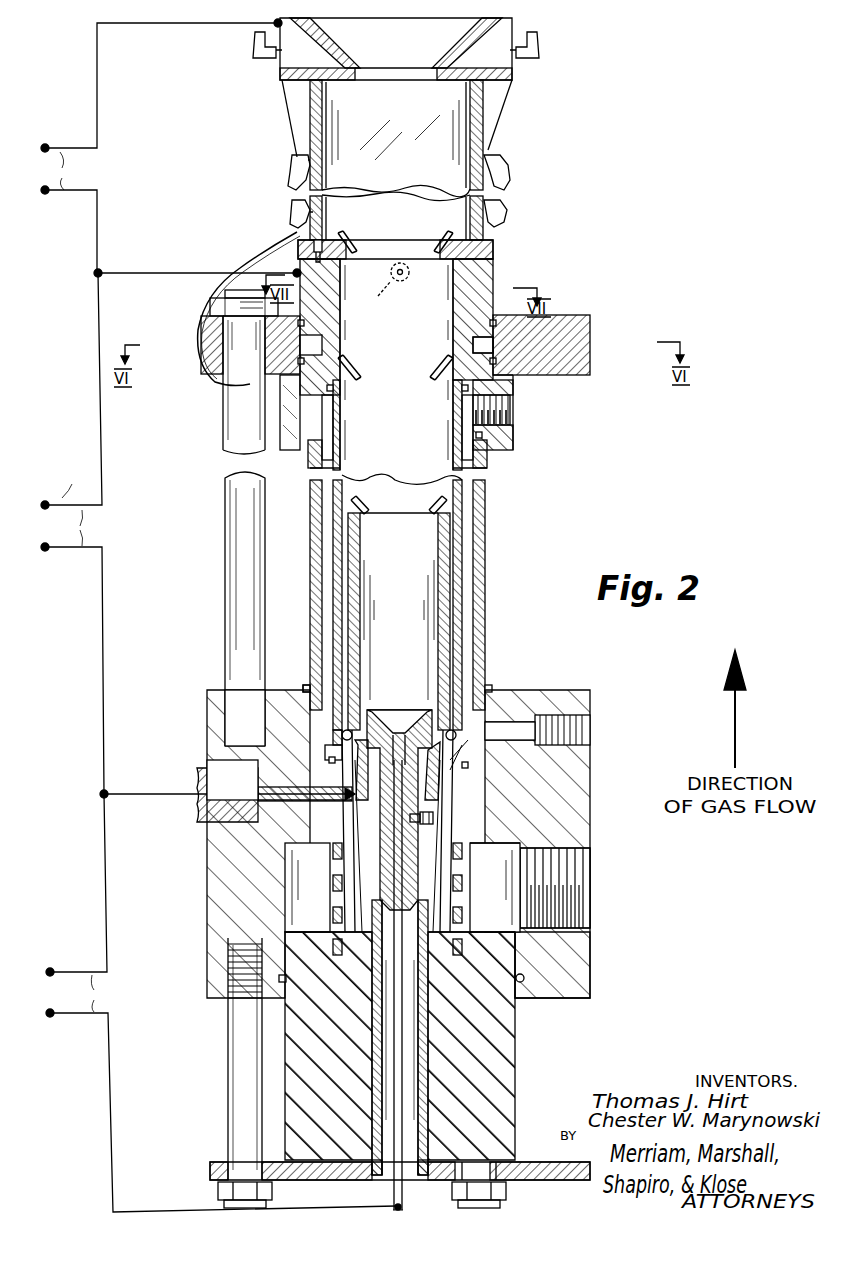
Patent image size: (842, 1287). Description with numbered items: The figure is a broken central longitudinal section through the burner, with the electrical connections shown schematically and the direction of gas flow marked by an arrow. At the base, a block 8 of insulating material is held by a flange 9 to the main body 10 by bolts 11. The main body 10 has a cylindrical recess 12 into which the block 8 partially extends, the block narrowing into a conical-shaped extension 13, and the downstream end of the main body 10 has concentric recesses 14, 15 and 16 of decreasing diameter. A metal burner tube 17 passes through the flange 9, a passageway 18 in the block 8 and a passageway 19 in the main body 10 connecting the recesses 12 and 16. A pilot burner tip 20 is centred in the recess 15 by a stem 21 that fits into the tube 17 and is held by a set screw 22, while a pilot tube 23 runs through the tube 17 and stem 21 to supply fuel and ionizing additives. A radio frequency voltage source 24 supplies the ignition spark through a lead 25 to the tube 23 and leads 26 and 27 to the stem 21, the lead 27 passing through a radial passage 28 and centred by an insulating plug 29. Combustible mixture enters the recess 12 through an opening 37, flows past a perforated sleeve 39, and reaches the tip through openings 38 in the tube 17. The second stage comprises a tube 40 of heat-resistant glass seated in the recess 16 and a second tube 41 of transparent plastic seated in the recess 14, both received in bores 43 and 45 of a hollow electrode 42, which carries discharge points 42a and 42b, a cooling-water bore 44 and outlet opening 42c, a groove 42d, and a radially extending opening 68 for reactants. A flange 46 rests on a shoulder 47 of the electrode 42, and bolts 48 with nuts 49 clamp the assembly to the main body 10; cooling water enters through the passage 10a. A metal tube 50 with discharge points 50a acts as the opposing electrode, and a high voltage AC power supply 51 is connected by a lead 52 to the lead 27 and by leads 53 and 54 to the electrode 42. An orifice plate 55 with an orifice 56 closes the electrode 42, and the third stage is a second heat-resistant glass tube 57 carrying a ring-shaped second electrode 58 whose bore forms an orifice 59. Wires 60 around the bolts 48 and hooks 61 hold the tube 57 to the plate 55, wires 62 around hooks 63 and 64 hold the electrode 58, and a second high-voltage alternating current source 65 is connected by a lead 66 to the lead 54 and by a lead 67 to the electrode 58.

The block of insulating material 8 is at (516, 1045).
The flange 9 is at (535, 1163).
The main body 10 is at (591, 965).
The passage 10a is at (590, 730).
The bolts 11 is at (229, 1043).
The cylindrical recess 12 is at (502, 873).
The conical-shaped extension 13 is at (332, 898).
The cylindrical recess 14 is at (306, 688).
The cylindrical recess 15 is at (333, 733).
The cylindrical recess 16 is at (330, 755).
The metal burner tube 17 is at (376, 1188).
The passageway 18 is at (376, 1030).
The passageway 19 is at (441, 802).
The pilot burner tip 20 is at (403, 710).
The stem 21 is at (455, 760).
The set screw 22 is at (434, 822).
The pilot tube 23 is at (405, 1205).
The radio frequency voltage source 24 is at (78, 993).
The lead 25 is at (110, 1068).
The lead 26 is at (106, 862).
The lead 27 is at (165, 794).
The radial passage 28 is at (300, 802).
The insulating plug 29 is at (197, 772).
The opening 37 is at (591, 905).
The openings 38 is at (355, 780).
The perforated sleeve 39 is at (495, 874).
The tube of heat-resistant glass 40 is at (463, 490).
The second tube of transparent plastic material 41 is at (486, 514).
The electrode 42 is at (513, 394).
The discharge points 42a is at (432, 378).
The discharge points 42b is at (438, 234).
The opening 42c is at (511, 424).
The groove 42d is at (473, 345).
The bore 43 is at (340, 412).
The bore 44 is at (461, 411).
The bore 45 is at (490, 455).
The flange 46 is at (590, 332).
The shoulder 47 is at (516, 383).
The bolts 48 is at (224, 521).
The nuts 49 is at (210, 305).
The metal tube 50 is at (440, 575).
The discharge points 50a is at (440, 500).
The high voltage AC power supply 51 is at (73, 515).
The lead 52 is at (104, 620).
The lead 53 is at (101, 429).
The lead 54 is at (142, 273).
The orifice plate 55 is at (495, 250).
The orifice 56 is at (412, 276).
The second heat-resistant glass tube 57 is at (484, 124).
The second electrode 58 is at (512, 72).
The orifice 59 is at (441, 80).
The wires 60 is at (280, 252).
The hooks 61 is at (289, 212).
The wires 62 is at (283, 103).
The hooks 63 is at (290, 171).
The hooks 64 is at (254, 43).
The second high-voltage alternating current source 65 is at (71, 171).
The lead 66 is at (97, 231).
The lead 67 is at (97, 72).
The radially extending opening 68 is at (370, 294).